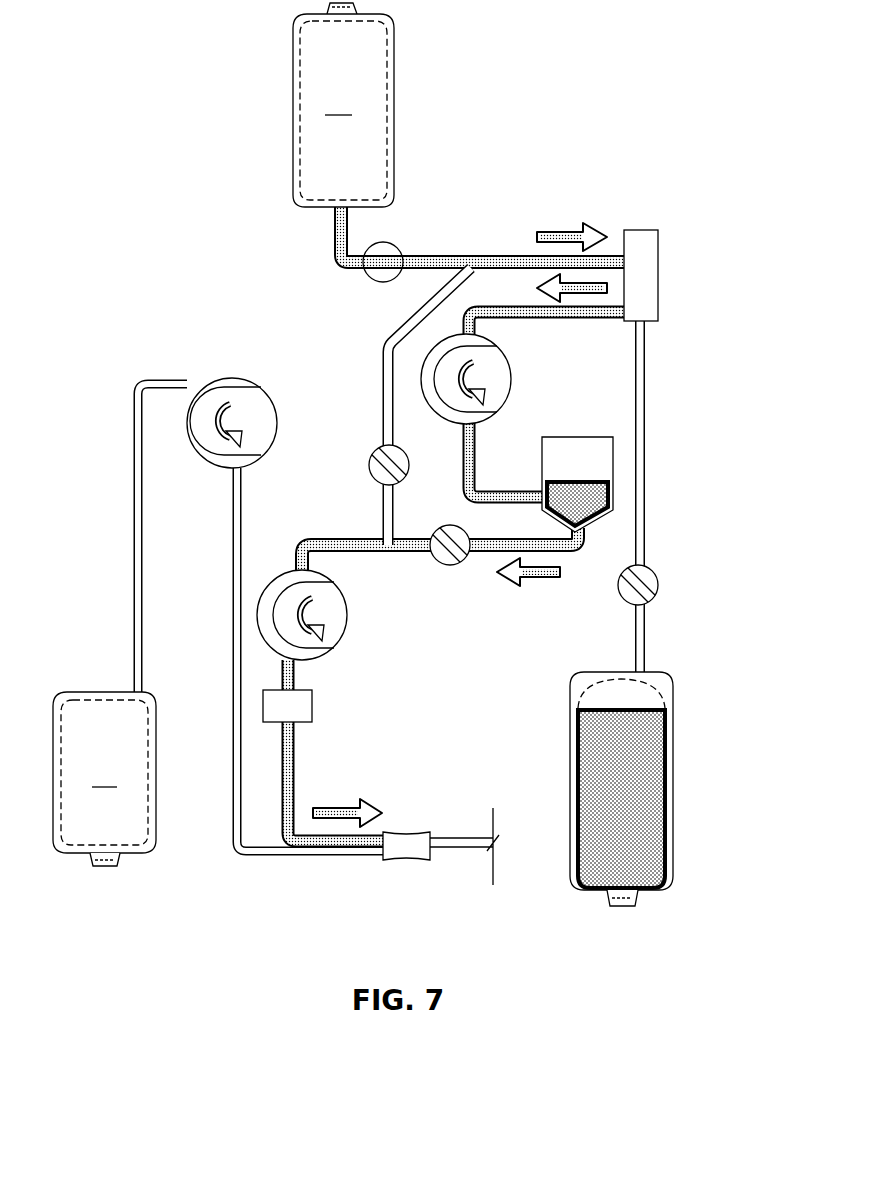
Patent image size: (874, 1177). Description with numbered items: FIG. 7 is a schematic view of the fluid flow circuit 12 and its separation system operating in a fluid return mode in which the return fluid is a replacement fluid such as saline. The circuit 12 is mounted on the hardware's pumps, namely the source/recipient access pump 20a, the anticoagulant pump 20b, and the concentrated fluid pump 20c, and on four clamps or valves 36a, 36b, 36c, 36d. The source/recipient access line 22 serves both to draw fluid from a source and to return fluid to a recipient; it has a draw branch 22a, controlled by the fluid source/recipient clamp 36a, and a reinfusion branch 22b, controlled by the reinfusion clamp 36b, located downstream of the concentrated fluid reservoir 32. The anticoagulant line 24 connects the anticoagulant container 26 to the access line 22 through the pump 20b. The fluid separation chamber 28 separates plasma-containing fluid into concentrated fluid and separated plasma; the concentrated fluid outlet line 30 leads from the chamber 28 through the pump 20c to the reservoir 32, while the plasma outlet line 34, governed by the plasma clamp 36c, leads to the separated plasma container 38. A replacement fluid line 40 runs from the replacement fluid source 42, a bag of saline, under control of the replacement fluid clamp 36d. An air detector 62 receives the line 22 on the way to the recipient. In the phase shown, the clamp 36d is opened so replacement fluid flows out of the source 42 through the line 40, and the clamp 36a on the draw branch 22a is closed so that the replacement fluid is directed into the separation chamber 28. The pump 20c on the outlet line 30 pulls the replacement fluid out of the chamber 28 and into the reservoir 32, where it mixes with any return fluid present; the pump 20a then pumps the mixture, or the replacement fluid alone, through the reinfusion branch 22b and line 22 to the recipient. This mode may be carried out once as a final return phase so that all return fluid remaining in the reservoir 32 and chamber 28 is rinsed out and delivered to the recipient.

The fluid flow circuit 12 is at (246, 241).
The source/recipient access pump 20a is at (346, 625).
The anticoagulant pump 20b is at (238, 378).
The concentrated fluid pump 20c is at (518, 378).
The source/recipient access line 22 is at (297, 738).
The draw branch 22a is at (382, 360).
The reinfusion branch 22b is at (468, 527).
The anticoagulant line 24 is at (133, 544).
The anticoagulant container 26 is at (104, 779).
The fluid separation chamber 28 is at (662, 280).
The concentrated fluid outlet line 30 is at (548, 322).
The concentrated fluid reservoir 32 is at (620, 478).
The plasma outlet line 34 is at (646, 637).
The fluid source/recipient clamp 36a is at (367, 465).
The reinfusion clamp 36b is at (457, 566).
The plasma clamp 36c is at (660, 588).
The replacement fluid clamp 36d is at (398, 238).
The separated plasma container 38 is at (674, 776).
The replacement fluid line 40 is at (333, 243).
The replacement fluid source 42 is at (343, 105).
The air detector 62 is at (313, 705).